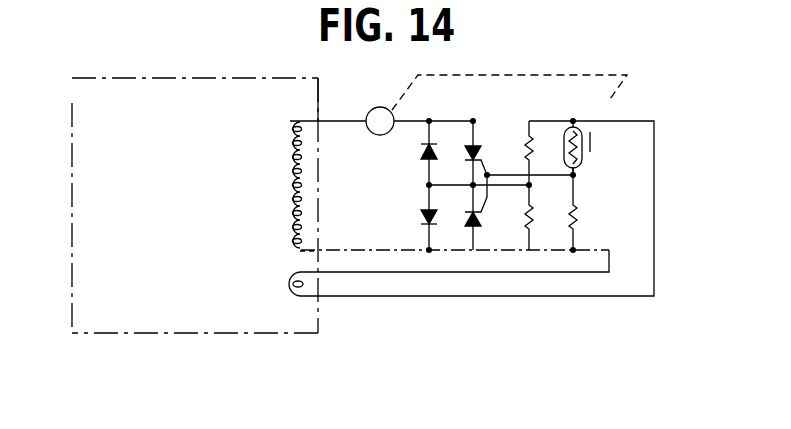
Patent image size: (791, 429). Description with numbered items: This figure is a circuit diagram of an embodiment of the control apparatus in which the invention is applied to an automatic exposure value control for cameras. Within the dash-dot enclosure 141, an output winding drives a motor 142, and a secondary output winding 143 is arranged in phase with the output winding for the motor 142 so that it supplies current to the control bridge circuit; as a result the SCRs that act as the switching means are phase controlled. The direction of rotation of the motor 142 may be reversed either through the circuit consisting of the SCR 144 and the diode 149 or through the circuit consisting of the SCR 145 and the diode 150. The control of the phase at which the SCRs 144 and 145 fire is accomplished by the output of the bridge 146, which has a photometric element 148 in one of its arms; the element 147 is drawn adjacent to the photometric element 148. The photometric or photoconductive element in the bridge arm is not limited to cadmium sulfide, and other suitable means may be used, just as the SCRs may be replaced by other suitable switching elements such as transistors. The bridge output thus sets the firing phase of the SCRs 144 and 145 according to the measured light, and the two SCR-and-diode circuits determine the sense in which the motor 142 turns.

The dash-dot enclosure (circuit unit boundary) 141 is at (158, 81).
The motor 142 is at (374, 107).
The secondary output winding 143 is at (290, 284).
The SCR 144 is at (472, 150).
The SCR 145 is at (481, 226).
The bridge 146 is at (577, 203).
The thermistor heater 147 is at (588, 160).
The photometric element 148 is at (565, 129).
The diode 149 is at (421, 214).
The diode 150 is at (421, 152).